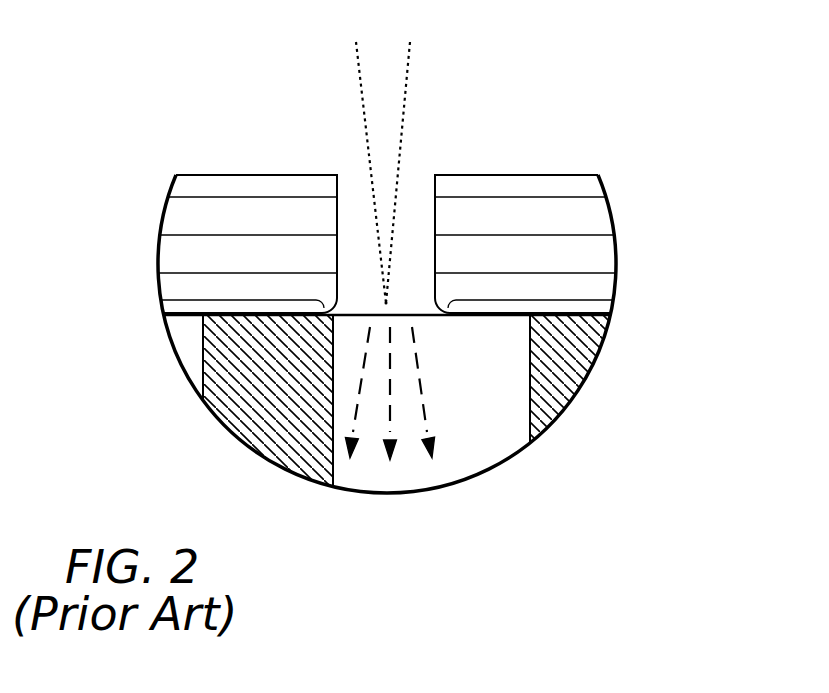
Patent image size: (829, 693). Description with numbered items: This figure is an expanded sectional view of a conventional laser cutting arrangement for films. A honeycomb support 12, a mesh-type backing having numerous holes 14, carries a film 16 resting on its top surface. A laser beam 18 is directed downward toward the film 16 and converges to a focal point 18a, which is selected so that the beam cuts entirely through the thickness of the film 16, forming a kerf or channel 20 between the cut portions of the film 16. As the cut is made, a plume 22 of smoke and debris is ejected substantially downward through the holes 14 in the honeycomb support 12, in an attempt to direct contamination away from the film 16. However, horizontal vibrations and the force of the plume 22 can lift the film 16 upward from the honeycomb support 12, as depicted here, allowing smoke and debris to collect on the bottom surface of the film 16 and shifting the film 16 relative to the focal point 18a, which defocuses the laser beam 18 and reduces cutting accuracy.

The honeycomb support 12 is at (602, 358).
The holes 14 is at (177, 345).
The film 16 is at (177, 219).
The laser beam 18 is at (410, 48).
The focal point 18a is at (396, 298).
The kerf or channel 20 is at (344, 168).
The plume 22 is at (385, 470).